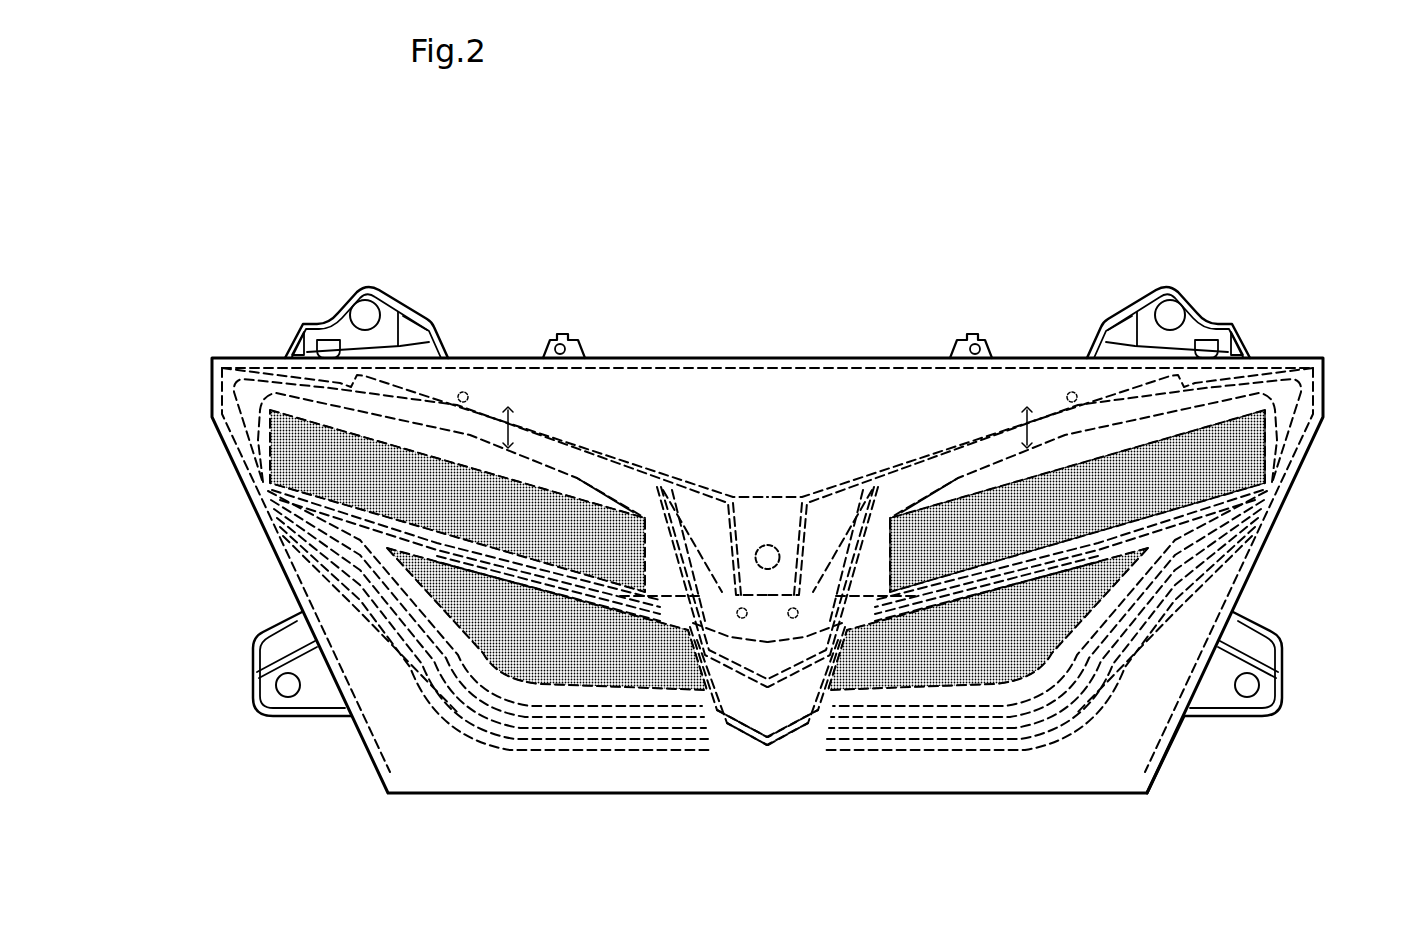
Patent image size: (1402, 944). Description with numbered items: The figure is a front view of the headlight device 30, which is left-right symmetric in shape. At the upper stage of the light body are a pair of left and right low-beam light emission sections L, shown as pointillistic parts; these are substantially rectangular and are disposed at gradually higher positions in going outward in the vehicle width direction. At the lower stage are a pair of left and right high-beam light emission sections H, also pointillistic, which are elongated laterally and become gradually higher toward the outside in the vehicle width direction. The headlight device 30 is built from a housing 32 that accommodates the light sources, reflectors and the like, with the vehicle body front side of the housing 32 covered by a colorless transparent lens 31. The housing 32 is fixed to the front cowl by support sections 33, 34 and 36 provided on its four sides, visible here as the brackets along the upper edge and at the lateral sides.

The headlight device 30 is at (745, 258).
The colorless transparent lens 31 is at (757, 718).
The housing 32 is at (1210, 720).
The support section 33 is at (1283, 690).
The support section 34 is at (1158, 300).
The support section 36 is at (576, 345).
The low-beam light emission section L is at (470, 470).
The high-beam light emission section H is at (585, 688).